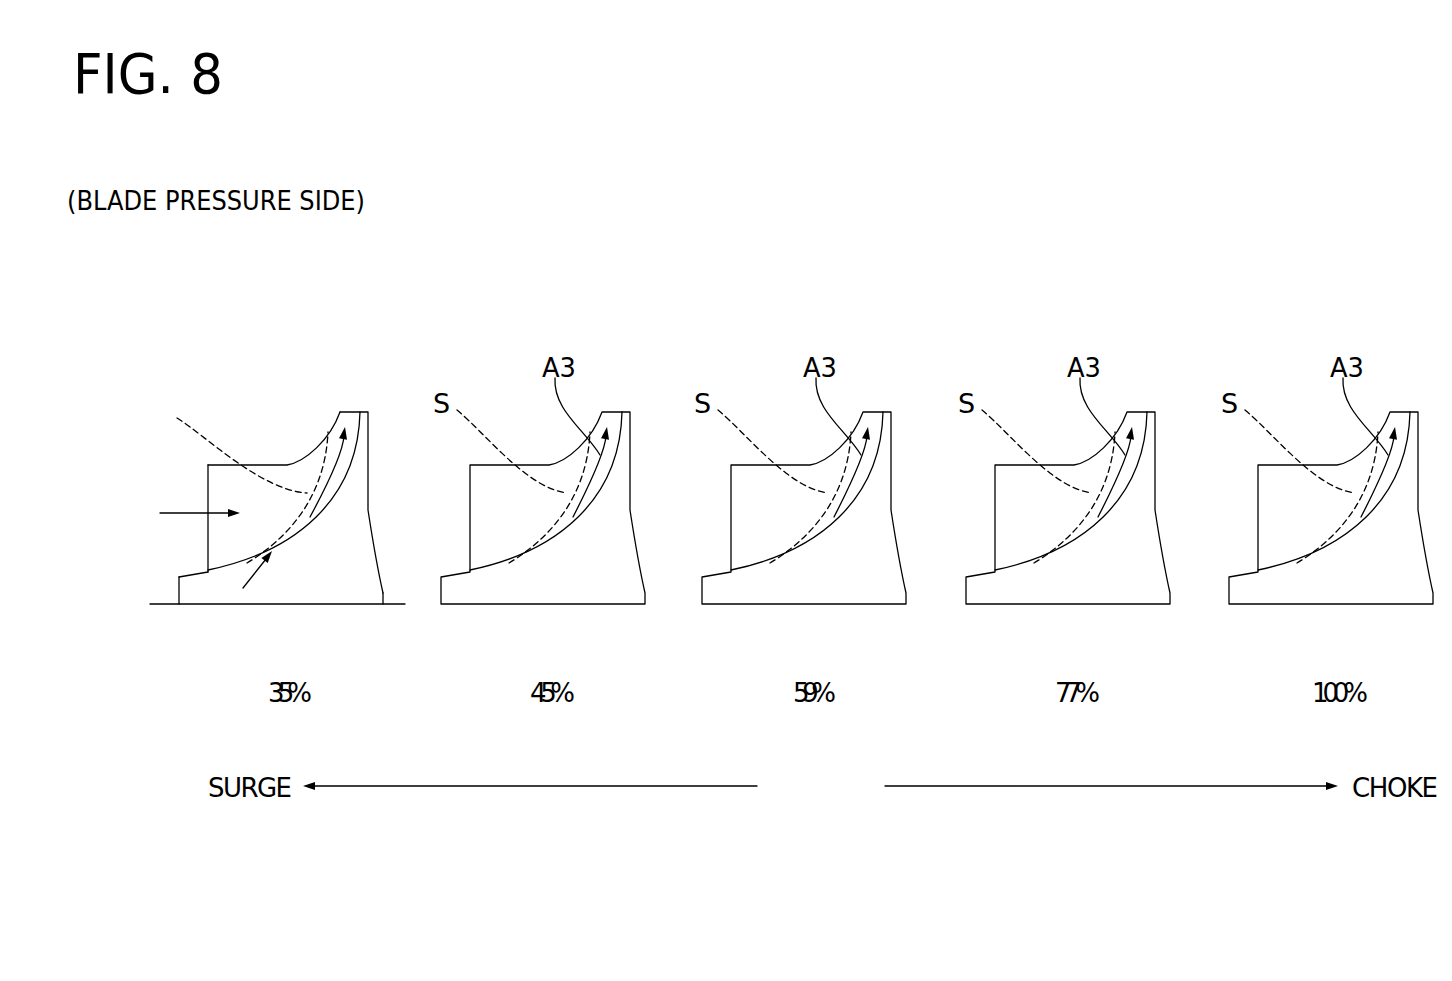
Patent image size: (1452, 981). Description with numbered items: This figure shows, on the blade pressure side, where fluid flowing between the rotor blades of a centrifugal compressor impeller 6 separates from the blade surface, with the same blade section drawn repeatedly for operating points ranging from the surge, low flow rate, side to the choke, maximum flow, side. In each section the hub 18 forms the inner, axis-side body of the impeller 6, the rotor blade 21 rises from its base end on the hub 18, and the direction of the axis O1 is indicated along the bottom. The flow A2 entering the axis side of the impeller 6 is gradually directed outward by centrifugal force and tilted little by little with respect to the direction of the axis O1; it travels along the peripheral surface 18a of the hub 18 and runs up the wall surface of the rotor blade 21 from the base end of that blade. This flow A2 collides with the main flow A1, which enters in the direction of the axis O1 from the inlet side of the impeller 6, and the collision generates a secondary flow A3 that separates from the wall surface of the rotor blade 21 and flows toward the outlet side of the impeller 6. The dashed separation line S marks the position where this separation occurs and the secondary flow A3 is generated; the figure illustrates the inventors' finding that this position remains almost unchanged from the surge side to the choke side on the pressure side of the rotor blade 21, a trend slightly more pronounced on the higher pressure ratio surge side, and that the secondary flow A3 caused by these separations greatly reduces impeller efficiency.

The impeller 6 is at (166, 377).
The hub 18 is at (203, 592).
The peripheral surface 18a is at (200, 572).
The rotor blade 21 is at (287, 458).
The separation line S is at (232, 446).
The main flow A1 is at (185, 513).
The flow A2 is at (255, 573).
The secondary flow A3 is at (338, 447).
The axis O1 is at (145, 604).